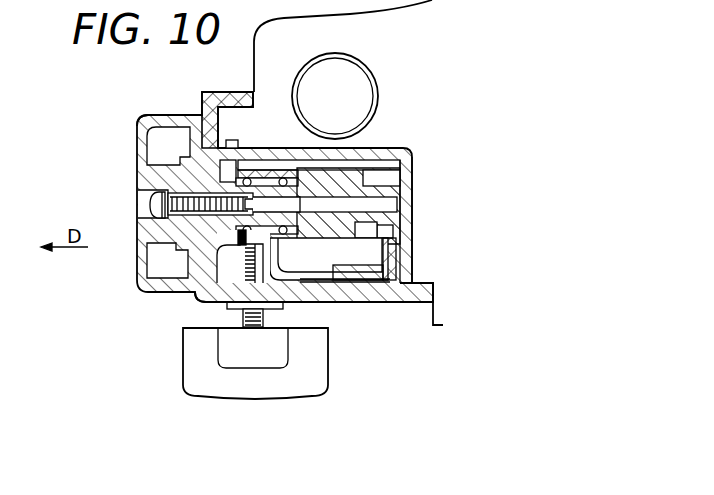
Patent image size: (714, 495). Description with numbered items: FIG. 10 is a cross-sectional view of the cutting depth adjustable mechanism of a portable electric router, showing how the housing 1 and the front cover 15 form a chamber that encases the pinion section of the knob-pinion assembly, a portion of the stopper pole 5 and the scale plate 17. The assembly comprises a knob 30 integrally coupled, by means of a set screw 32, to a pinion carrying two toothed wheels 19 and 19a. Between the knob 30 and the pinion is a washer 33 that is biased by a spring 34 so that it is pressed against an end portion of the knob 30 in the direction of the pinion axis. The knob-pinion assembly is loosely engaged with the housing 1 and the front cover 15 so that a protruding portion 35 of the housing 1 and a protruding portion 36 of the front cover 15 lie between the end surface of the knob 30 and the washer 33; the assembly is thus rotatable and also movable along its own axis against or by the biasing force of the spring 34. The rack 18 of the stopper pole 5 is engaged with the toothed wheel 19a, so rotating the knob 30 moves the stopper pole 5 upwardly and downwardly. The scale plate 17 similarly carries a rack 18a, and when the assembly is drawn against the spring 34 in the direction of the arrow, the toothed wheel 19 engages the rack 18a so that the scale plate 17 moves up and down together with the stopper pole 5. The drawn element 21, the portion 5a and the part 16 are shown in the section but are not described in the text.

The housing 1 is at (204, 100).
The protruding portion of the housing 35 is at (220, 110).
The knob 30 is at (137, 132).
The protruding portion of the front cover 36 is at (150, 257).
The set screw 32 is at (148, 200).
The toothed wheel 19 is at (313, 160).
The toothed wheel 19a is at (392, 162).
The washer 33 is at (238, 164).
The spring 34 is at (278, 160).
The rack 18 is at (394, 232).
The rack 18a is at (280, 242).
The return spring 21 is at (350, 237).
The scale plate 17 is at (296, 283).
The stopper pole 5 is at (378, 286).
The base plate portion 5a is at (353, 286).
The front cover 15 is at (204, 294).
The knob 16 is at (183, 371).